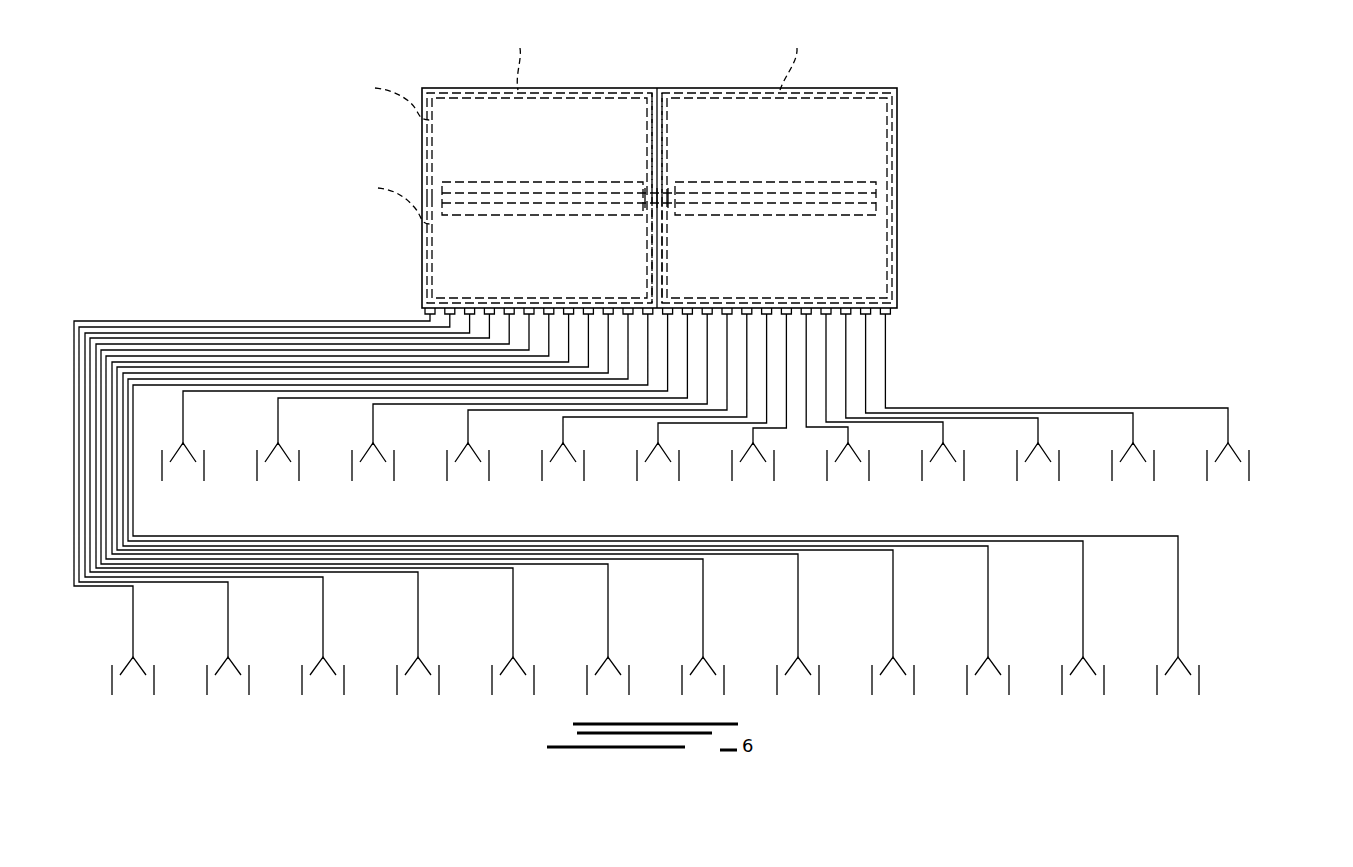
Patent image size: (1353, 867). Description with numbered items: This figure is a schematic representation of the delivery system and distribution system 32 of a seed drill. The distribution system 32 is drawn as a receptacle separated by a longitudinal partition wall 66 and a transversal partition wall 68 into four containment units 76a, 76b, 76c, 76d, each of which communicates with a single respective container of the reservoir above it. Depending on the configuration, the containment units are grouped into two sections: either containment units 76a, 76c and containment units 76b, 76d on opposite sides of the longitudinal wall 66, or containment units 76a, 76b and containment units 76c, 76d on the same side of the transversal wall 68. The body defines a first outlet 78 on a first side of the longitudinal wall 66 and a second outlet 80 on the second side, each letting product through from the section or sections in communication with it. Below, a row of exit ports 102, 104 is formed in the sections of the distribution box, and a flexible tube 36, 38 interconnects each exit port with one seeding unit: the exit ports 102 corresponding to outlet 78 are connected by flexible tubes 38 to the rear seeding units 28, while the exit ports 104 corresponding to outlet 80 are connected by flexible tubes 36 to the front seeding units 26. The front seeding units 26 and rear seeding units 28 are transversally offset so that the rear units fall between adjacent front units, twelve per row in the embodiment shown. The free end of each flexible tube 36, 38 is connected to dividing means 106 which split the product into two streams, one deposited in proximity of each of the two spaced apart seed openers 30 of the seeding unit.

The front seeding units 26 is at (1252, 469).
The rear seeding units 28 is at (1204, 690).
The seed openers 30 is at (1207, 481).
The distribution system 32 is at (905, 98).
The flexible tube 36 is at (1093, 408).
The flexible tube 38 is at (700, 602).
The longitudinal partition wall 66 is at (660, 122).
The transversal partition wall 68 is at (885, 216).
The containment unit 76a is at (568, 270).
The containment unit 76b is at (803, 270).
The containment unit 76c is at (568, 157).
The containment unit 76d is at (803, 157).
The first outlet 78 is at (485, 216).
The second outlet 80 is at (880, 184).
The exit port 102 is at (440, 316).
The exit port 104 is at (868, 318).
The dividing means 106 is at (1242, 455).